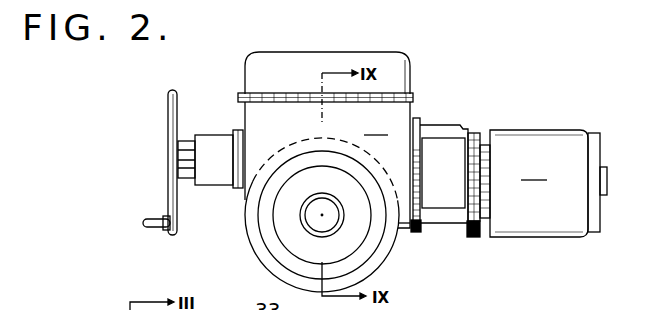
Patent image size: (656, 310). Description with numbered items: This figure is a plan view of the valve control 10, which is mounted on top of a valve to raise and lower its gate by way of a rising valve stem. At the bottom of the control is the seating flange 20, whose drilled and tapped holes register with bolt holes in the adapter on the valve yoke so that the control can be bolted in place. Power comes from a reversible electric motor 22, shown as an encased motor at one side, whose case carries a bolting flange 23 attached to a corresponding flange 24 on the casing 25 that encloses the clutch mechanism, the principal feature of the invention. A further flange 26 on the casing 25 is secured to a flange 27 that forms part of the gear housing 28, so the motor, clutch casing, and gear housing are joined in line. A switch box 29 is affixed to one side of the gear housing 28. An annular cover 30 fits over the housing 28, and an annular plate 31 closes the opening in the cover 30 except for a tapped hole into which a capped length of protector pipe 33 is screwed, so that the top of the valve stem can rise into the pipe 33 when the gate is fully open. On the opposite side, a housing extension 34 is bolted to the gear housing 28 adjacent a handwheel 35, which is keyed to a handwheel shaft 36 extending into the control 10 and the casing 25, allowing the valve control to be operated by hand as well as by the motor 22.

The valve control 10 is at (327, 165).
The seating flange 20 is at (391, 248).
The reversible electric motor 22 is at (548, 183).
The bolting flange 23 is at (482, 143).
The flange 24 is at (473, 133).
The casing 25 is at (440, 130).
The flange 26 is at (416, 226).
The flange 27 is at (412, 236).
The gear housing 28 is at (250, 112).
The switch box 29 is at (382, 60).
The annular cover 30 is at (287, 158).
The annular plate 31 is at (285, 245).
The protector pipe 33 is at (300, 210).
The housing extension 34 is at (200, 181).
The handwheel 35 is at (172, 98).
The handwheel shaft 36 is at (188, 163).